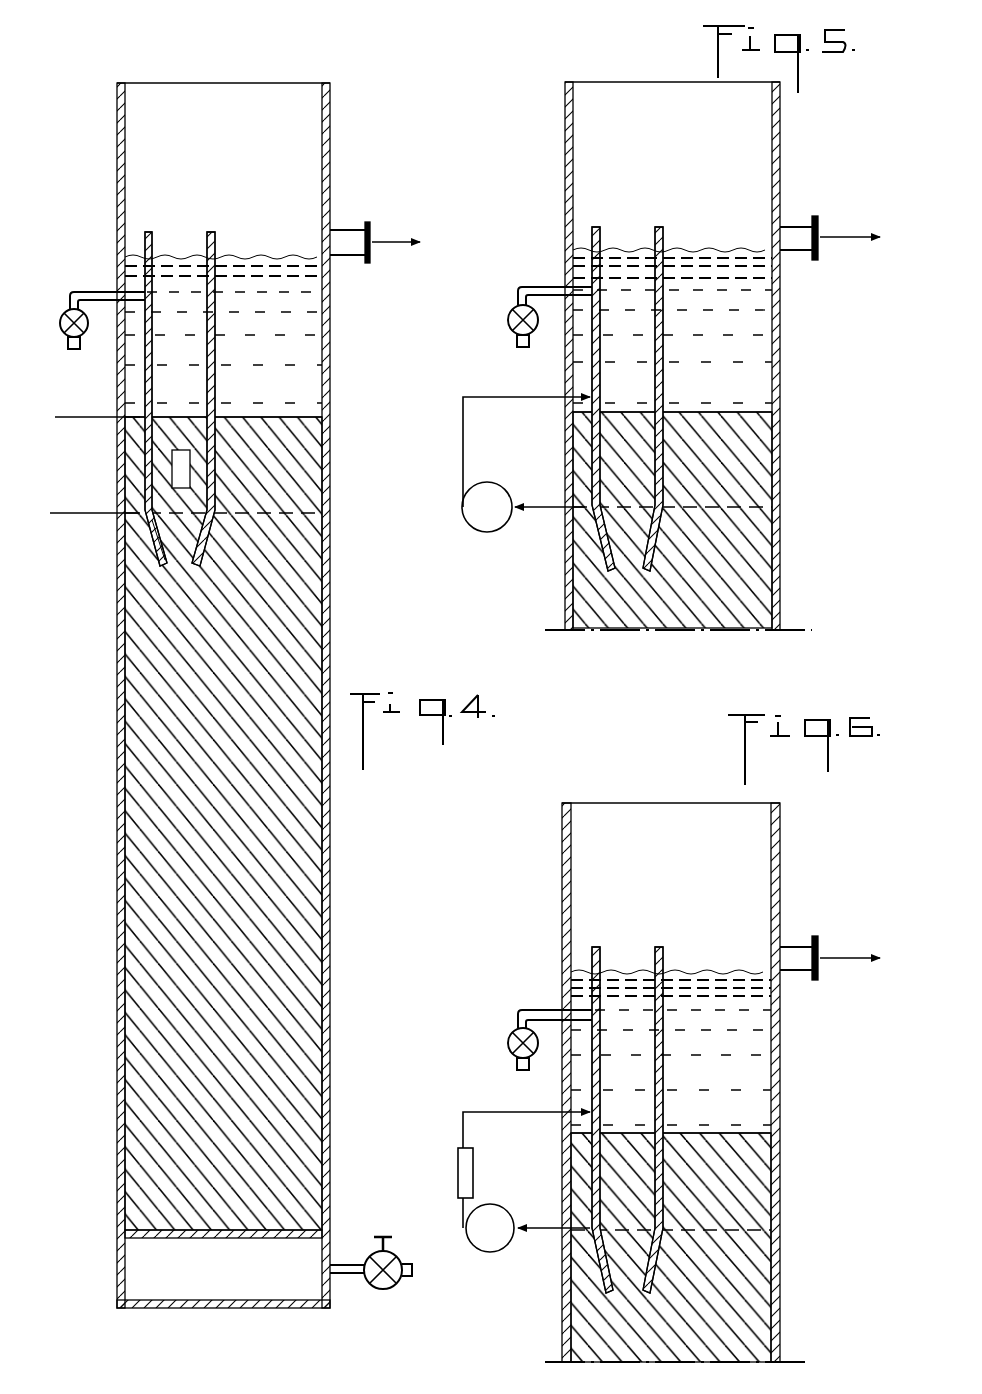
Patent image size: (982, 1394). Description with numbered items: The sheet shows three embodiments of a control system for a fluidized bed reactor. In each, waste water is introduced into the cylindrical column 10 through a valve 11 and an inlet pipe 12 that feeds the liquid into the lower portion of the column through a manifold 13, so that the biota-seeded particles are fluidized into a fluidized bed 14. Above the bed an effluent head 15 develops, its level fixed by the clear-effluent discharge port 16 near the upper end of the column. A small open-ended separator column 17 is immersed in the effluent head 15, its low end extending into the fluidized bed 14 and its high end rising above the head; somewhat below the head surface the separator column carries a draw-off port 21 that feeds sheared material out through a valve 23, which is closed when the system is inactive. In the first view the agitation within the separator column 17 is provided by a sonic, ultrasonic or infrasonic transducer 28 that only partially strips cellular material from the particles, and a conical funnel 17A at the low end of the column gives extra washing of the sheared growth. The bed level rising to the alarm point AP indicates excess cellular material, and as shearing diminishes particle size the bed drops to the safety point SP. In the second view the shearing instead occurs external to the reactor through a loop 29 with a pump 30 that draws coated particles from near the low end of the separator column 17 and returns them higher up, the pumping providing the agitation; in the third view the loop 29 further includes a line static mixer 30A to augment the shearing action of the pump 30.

In FIG. 4, the cylindrical column 10 is at (330, 350).
In FIG. 5, the cylindrical column 10 is at (782, 180).
In FIG. 6, the cylindrical column 10 is at (782, 1090).
In FIG. 4, the valve 11 is at (392, 1288).
In FIG. 4, the inlet pipe 12 is at (347, 1276).
In FIG. 4, the manifold 13 is at (245, 1240).
In FIG. 4, the fluidized bed 14 is at (305, 537).
In FIG. 5, the fluidized bed 14 is at (762, 568).
In FIG. 6, the fluidized bed 14 is at (752, 1300).
In FIG. 4, the effluent head 15 is at (270, 270).
In FIG. 5, the effluent head 15 is at (722, 260).
In FIG. 6, the effluent head 15 is at (722, 975).
In FIG. 4, the clear-effluent discharge port 16 is at (352, 233).
In FIG. 5, the clear-effluent discharge port 16 is at (798, 246).
In FIG. 6, the clear-effluent discharge port 16 is at (790, 968).
In FIG. 4, the separator column 17 is at (213, 233).
In FIG. 5, the separator column 17 is at (663, 228).
In FIG. 6, the separator column 17 is at (663, 948).
In FIG. 4, the conical funnel 17A is at (158, 552).
In FIG. 4, the draw-off port 21 is at (86, 290).
In FIG. 5, the draw-off port 21 is at (538, 287).
In FIG. 6, the draw-off port 21 is at (532, 1010).
In FIG. 4, the valve 23 is at (60, 332).
In FIG. 5, the valve 23 is at (507, 320).
In FIG. 6, the valve 23 is at (507, 1043).
In FIG. 4, the transducer 28 is at (177, 470).
In FIG. 5, the loop 29 is at (463, 445).
In FIG. 6, the loop 29 is at (518, 1112).
In FIG. 5, the pump 30 is at (485, 522).
In FIG. 6, the pump 30 is at (500, 1248).
In FIG. 6, the line static mixer 30A is at (475, 1172).
In FIG. 4, the alarm point AP is at (140, 420).
In FIG. 4, the safety point SP is at (140, 518).